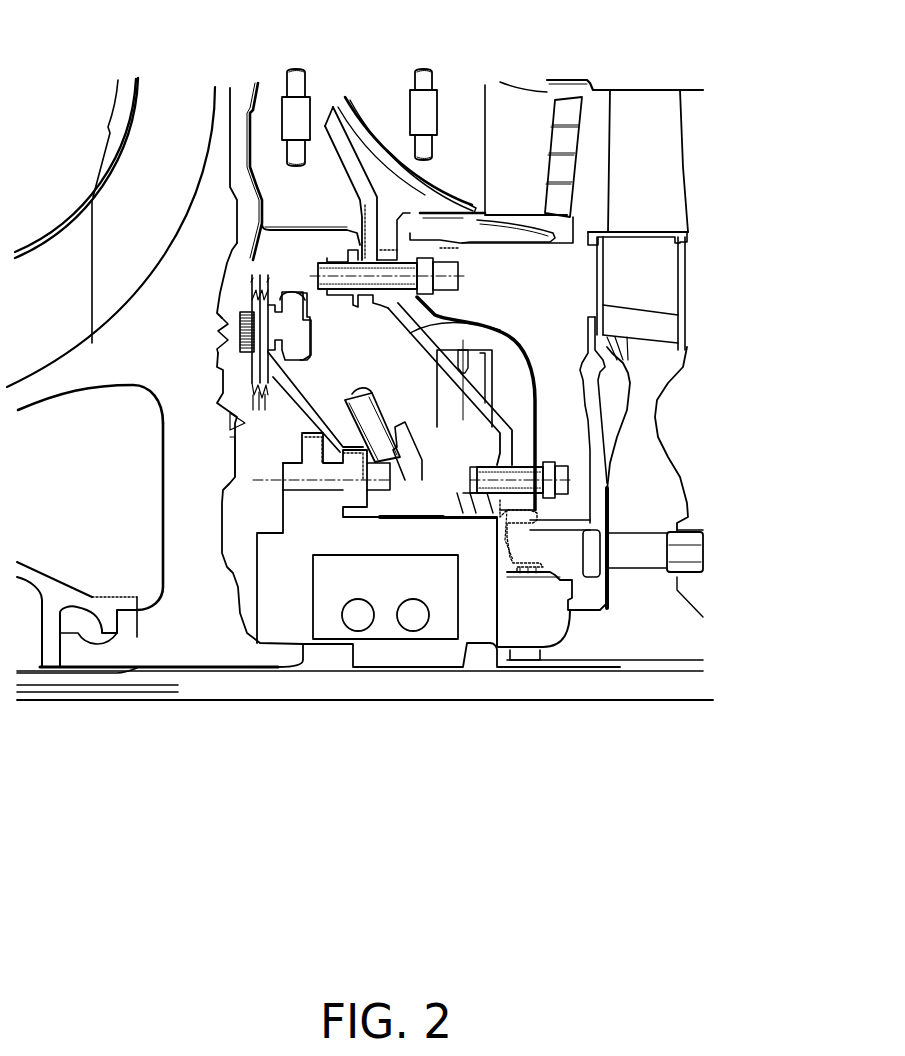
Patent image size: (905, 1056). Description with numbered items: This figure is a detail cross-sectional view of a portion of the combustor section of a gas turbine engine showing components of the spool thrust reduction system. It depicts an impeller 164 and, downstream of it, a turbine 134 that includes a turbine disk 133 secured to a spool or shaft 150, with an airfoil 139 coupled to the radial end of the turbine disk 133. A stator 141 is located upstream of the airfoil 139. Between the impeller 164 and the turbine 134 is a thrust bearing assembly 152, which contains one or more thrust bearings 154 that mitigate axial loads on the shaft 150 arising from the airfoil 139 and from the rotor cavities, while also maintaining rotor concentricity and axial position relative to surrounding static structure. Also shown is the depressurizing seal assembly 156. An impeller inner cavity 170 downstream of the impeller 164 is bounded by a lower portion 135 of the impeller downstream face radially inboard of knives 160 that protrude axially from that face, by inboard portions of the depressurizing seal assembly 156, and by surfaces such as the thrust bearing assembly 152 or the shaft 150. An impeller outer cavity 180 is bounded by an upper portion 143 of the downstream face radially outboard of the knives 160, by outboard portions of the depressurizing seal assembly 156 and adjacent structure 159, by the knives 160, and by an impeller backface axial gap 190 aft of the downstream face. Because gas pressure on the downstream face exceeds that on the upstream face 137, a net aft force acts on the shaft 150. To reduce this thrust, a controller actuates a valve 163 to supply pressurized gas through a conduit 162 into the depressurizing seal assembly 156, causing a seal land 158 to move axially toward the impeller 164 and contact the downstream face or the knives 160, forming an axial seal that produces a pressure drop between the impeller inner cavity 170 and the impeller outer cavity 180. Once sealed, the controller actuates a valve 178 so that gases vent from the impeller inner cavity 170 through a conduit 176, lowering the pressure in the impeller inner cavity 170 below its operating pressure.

The turbine disk 133 is at (670, 473).
The turbine 134 is at (683, 373).
The lower portion of downstream face of impeller 135 is at (248, 423).
The upstream face 137 is at (160, 503).
The airfoil 139 is at (647, 113).
The stator 141 is at (527, 103).
The upper portion of downstream face of impeller 143 is at (220, 293).
The shaft 150 is at (470, 685).
The thrust bearing assembly 152 is at (320, 553).
The thrust bearing 154 is at (357, 599).
The depressurizing seal assembly 156 is at (313, 393).
The seal land 158 is at (237, 345).
The adjacent structure 159 is at (480, 323).
The knives 160 is at (220, 316).
The conduit 162 is at (307, 157).
The valve 163 is at (308, 97).
The impeller 164 is at (150, 428).
The impeller inner cavity 170 is at (250, 445).
The conduit 176 is at (435, 143).
The valve 178 is at (435, 87).
The impeller outer cavity 180 is at (262, 268).
The impeller backface axial gap 190 is at (243, 250).